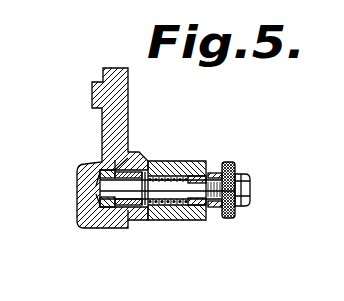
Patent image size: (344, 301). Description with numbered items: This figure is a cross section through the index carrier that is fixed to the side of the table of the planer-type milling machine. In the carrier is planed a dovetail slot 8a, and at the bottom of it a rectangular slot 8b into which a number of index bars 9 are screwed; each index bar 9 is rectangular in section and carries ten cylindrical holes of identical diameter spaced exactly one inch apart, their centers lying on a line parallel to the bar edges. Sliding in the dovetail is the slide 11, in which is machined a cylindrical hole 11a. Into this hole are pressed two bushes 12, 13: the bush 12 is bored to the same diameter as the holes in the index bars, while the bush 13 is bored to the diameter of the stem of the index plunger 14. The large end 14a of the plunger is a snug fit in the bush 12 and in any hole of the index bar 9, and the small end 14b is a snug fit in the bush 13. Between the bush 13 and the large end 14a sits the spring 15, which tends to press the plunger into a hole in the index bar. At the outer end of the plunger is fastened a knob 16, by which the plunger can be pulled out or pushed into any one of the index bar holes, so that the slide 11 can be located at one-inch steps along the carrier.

The dovetail slot 8a is at (133, 157).
The rectangular slot 8b is at (123, 208).
The index bar 9 is at (103, 197).
The slide 11 is at (176, 160).
The cylindrical hole 11a is at (202, 177).
The bush 12 is at (128, 208).
The bush 13 is at (203, 221).
The index plunger 14 is at (166, 214).
The large end 14a is at (103, 172).
The small end 14b is at (210, 164).
The spring 15 is at (170, 175).
The knob 16 is at (230, 163).